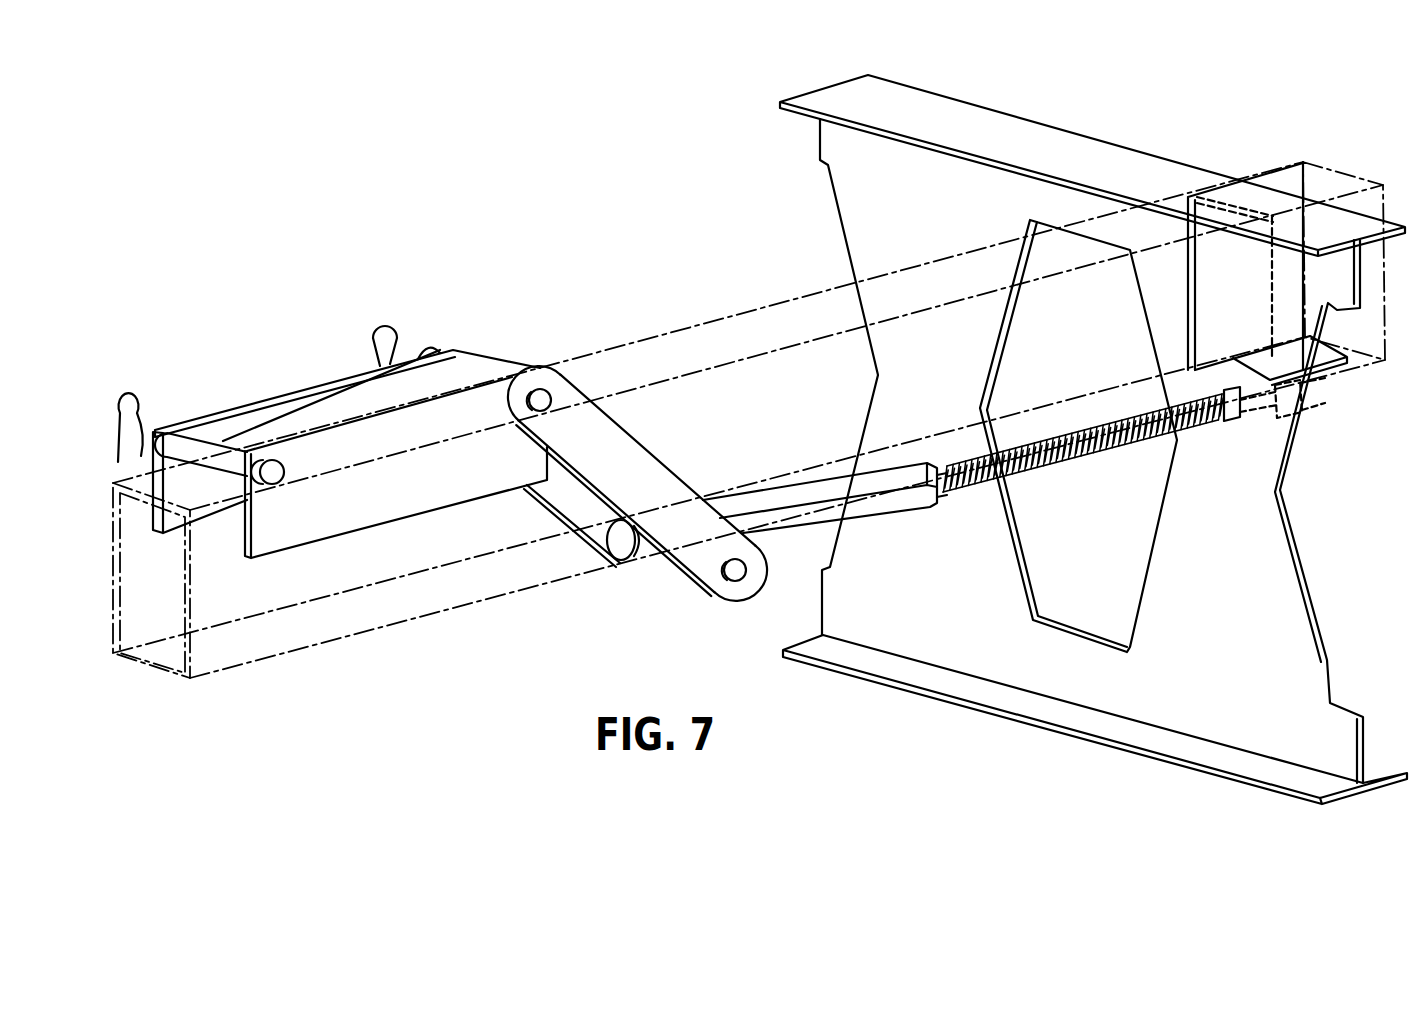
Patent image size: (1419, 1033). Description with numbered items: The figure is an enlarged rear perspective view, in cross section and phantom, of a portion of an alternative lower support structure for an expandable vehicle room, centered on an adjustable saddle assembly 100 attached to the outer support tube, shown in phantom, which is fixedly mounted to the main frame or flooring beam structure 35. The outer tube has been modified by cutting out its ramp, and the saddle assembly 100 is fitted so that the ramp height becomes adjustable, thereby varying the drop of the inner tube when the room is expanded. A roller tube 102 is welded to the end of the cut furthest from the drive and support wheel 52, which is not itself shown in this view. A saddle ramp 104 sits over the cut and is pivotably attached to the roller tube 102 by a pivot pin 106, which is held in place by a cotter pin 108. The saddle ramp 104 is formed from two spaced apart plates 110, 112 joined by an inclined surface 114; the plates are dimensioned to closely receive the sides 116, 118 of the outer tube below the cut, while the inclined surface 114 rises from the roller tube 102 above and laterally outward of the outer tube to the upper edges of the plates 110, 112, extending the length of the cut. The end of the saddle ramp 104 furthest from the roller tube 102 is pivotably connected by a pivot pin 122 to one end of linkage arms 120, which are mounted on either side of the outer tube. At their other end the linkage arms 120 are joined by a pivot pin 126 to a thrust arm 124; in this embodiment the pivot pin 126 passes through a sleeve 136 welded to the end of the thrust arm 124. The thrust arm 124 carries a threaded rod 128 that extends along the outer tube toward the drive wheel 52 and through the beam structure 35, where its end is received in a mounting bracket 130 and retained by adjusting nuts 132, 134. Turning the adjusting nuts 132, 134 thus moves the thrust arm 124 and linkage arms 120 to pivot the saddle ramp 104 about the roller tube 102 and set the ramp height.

The beam structure 35 is at (1232, 621).
The drive and support wheel 52 is at (621, 352).
The saddle assembly 100 is at (442, 186).
The roller tube 102 is at (190, 446).
The saddle ramp 104 is at (459, 346).
The pivot pin 106 is at (279, 472).
The cotter pin 108 is at (142, 395).
The plate 110 is at (432, 460).
The plate 112 is at (222, 420).
The inclined surface 114 is at (390, 413).
The side of outer tube 116 is at (121, 560).
The side of outer tube 118 is at (358, 580).
The linkage arms 120 is at (636, 482).
The pivot pin 122 is at (528, 428).
The thrust arm 124 is at (790, 540).
The pivot pin 126 is at (740, 591).
The threaded rod 128 is at (1030, 471).
The mounting bracket 130 is at (1330, 362).
The adjusting nut 132 is at (1284, 466).
The adjusting nut 134 is at (1308, 409).
The sleeve 136 is at (637, 540).